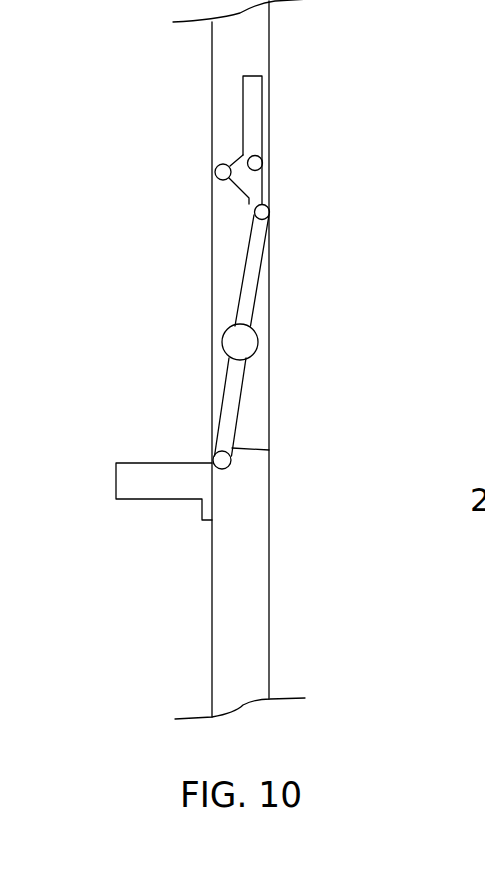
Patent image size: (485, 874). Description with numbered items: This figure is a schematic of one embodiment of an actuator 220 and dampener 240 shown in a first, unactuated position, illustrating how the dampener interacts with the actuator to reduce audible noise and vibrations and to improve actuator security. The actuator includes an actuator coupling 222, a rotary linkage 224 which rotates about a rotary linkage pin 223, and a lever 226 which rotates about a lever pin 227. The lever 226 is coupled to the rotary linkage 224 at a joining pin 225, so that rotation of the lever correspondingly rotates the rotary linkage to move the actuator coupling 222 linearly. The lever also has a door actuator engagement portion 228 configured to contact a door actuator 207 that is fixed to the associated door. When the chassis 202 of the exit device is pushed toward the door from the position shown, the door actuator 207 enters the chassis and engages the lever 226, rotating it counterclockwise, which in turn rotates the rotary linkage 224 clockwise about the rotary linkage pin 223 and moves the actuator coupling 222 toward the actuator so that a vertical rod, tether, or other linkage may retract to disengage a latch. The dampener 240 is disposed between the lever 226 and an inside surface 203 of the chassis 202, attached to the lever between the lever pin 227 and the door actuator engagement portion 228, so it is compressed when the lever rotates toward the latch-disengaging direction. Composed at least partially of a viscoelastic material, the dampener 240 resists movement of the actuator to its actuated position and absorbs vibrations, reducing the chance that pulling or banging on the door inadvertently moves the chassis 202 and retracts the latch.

The chassis 202 is at (245, 660).
The inside surface 203 is at (270, 583).
The door actuator 207 is at (127, 482).
The actuator 220 is at (327, 458).
The actuator coupling 222 is at (252, 93).
The rotary linkage pin 223 is at (223, 172).
The rotary linkage 224 is at (255, 183).
The joining pin 225 is at (262, 212).
The lever 226 is at (250, 275).
The lever pin 227 is at (237, 333).
The door actuator engagement portion 228 is at (214, 455).
The dampener 240 is at (255, 397).